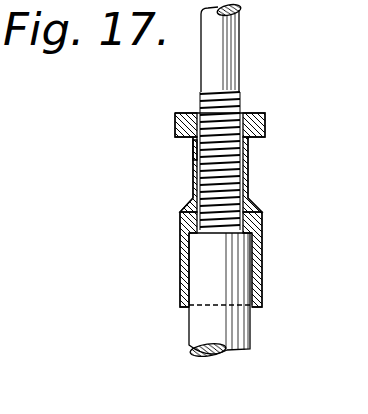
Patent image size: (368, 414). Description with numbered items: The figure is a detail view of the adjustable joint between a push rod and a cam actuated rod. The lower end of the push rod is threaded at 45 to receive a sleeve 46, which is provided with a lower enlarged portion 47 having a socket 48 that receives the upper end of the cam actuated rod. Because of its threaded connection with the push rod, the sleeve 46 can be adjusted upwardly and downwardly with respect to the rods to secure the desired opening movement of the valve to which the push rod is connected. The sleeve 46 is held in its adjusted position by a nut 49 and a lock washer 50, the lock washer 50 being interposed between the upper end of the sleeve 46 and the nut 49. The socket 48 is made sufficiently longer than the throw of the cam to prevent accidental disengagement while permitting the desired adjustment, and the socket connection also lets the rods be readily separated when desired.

The threaded lower end of push rod 45 is at (200, 108).
The nut 49 is at (265, 119).
The sleeve 46 is at (248, 178).
The lock washer 50 is at (193, 142).
The lower enlarged portion 47 is at (262, 292).
The socket 48 is at (200, 261).